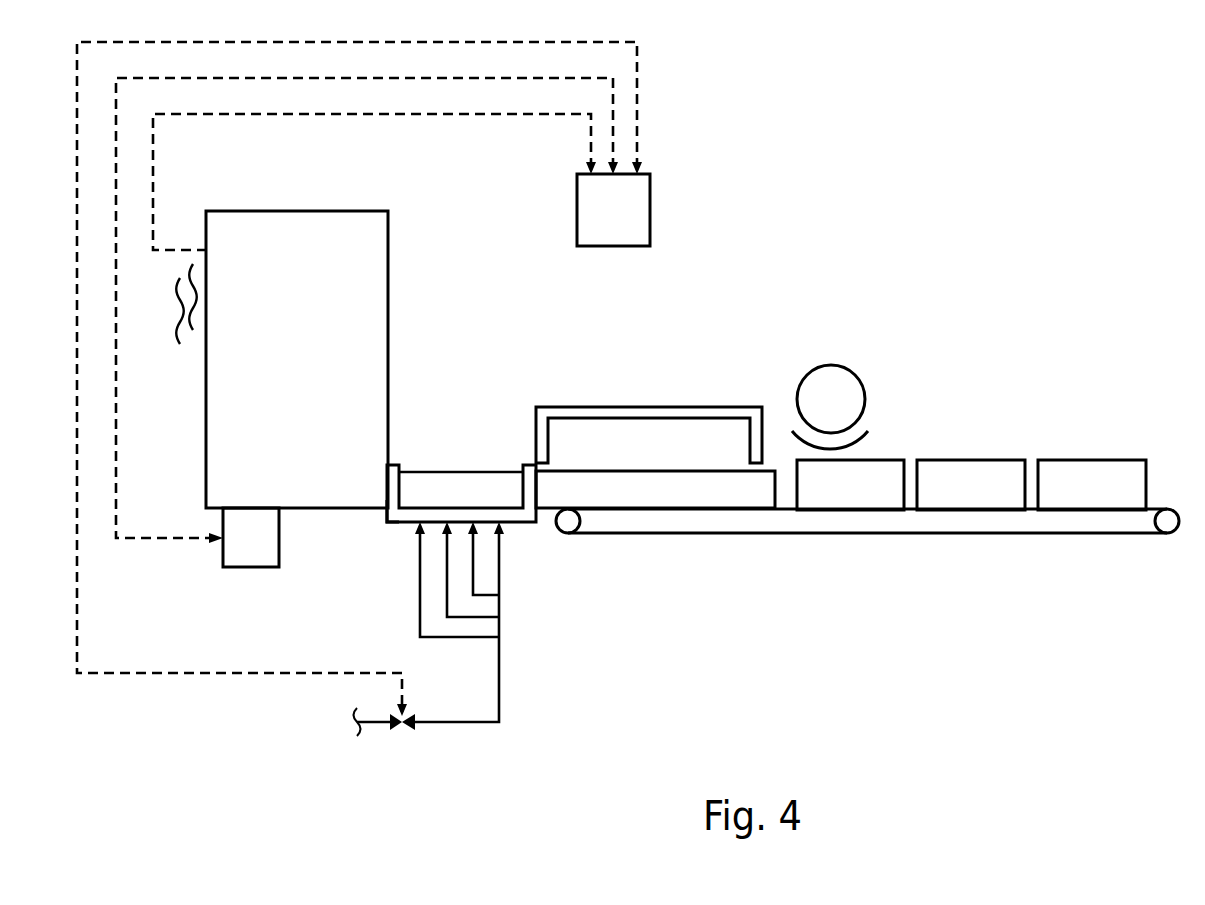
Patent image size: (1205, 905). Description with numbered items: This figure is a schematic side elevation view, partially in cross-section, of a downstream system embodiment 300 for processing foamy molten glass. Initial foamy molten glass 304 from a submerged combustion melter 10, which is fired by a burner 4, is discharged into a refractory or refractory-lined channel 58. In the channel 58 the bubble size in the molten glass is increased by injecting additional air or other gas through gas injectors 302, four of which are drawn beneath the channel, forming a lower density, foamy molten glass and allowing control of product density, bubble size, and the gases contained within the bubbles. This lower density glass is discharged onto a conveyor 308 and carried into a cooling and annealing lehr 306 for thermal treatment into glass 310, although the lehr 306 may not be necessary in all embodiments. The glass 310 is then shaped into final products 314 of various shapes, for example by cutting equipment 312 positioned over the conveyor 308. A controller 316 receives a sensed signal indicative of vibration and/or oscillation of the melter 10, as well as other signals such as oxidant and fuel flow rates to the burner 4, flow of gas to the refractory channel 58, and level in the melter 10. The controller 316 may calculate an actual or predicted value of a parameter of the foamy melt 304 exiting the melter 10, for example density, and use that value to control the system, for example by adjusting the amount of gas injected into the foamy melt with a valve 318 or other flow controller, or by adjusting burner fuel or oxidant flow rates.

The system embodiment 300 is at (995, 258).
The submerged combustion melter 10 is at (388, 313).
The burner 4 is at (243, 567).
The refractory channel 58 is at (393, 522).
The gas injectors 302 is at (448, 603).
The foamy molten glass 304 is at (422, 472).
The cooling and annealing lehr 306 is at (635, 407).
The conveyor 308 is at (1018, 533).
The glass 310 is at (733, 496).
The cutting equipment 312 is at (845, 372).
The final products 314 is at (875, 460).
The controller 316 is at (650, 209).
The valve 318 is at (408, 727).